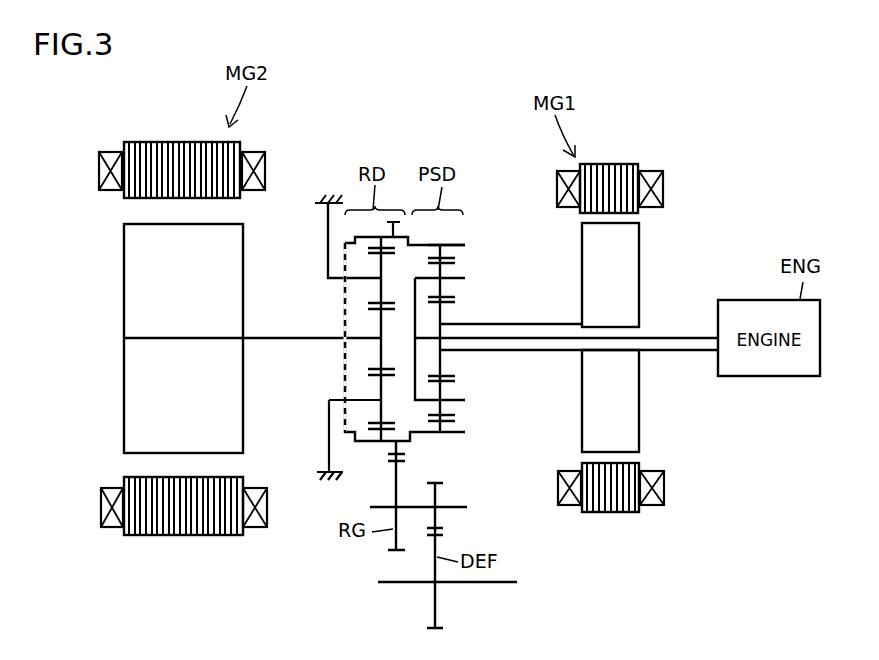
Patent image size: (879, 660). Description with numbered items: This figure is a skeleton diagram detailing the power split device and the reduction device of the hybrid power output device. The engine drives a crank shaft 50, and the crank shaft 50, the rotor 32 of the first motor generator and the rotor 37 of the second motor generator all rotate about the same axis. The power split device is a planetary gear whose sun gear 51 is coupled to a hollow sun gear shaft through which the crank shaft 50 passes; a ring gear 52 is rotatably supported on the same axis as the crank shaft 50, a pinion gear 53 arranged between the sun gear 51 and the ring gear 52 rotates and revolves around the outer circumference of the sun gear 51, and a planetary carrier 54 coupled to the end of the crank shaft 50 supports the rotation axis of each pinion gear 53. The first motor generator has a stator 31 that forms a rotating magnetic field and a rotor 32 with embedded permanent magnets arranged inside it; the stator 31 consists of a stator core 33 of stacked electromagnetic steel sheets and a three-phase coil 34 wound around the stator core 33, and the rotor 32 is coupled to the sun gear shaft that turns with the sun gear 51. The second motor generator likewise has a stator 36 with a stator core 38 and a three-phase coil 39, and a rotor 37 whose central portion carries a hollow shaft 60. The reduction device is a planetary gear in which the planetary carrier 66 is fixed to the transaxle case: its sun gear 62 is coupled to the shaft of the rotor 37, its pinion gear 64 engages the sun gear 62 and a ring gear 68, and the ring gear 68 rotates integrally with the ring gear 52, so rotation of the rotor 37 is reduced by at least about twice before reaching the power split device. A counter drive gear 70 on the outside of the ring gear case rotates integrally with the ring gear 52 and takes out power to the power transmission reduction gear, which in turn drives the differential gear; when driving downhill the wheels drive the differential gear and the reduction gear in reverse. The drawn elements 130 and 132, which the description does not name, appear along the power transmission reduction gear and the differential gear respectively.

The stator 31 is at (674, 490).
The rotor 32 is at (639, 275).
The stator core 33 is at (606, 164).
The three-phase coil 34 is at (650, 171).
The stator 36 is at (274, 516).
The rotor 37 is at (124, 258).
The stator core 38 is at (148, 142).
The three-phase coil 39 is at (108, 151).
The crank shaft 50 is at (680, 338).
The sun gear 51 is at (443, 318).
The ring gear 52 is at (445, 247).
The pinion gear 53 is at (443, 267).
The planetary carrier 54 is at (420, 278).
The hollow shaft 60 is at (273, 343).
The sun gear 62 is at (381, 324).
The pinion gear 64 is at (381, 290).
The planetary carrier 66 is at (328, 270).
The ring gear 68 is at (355, 237).
The counter drive gear 70 is at (402, 452).
The reduction gear shaft 130 is at (375, 507).
The differential gear shaft 132 is at (383, 582).